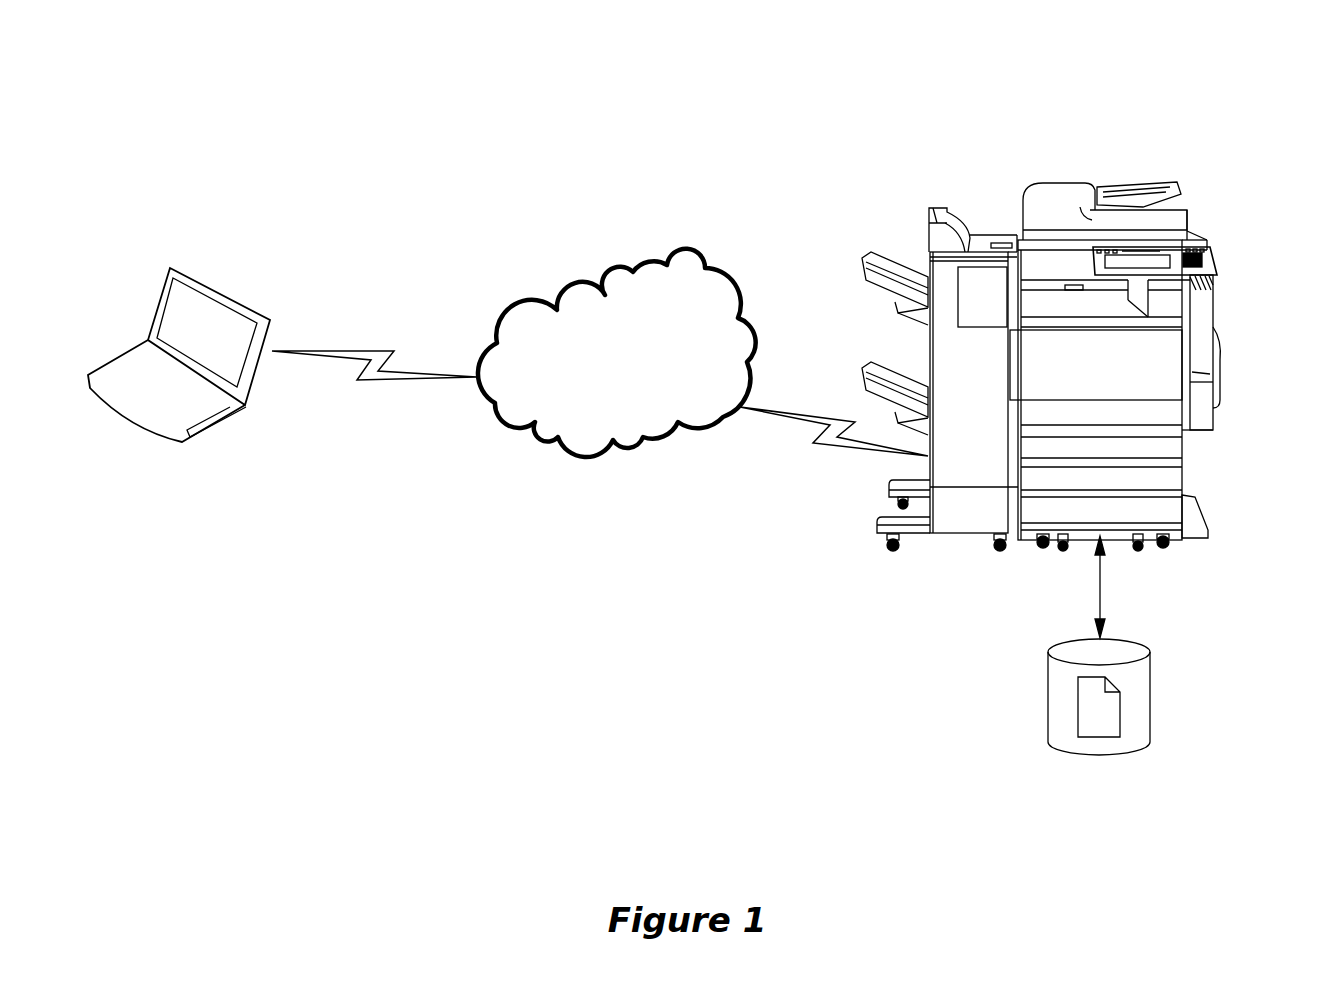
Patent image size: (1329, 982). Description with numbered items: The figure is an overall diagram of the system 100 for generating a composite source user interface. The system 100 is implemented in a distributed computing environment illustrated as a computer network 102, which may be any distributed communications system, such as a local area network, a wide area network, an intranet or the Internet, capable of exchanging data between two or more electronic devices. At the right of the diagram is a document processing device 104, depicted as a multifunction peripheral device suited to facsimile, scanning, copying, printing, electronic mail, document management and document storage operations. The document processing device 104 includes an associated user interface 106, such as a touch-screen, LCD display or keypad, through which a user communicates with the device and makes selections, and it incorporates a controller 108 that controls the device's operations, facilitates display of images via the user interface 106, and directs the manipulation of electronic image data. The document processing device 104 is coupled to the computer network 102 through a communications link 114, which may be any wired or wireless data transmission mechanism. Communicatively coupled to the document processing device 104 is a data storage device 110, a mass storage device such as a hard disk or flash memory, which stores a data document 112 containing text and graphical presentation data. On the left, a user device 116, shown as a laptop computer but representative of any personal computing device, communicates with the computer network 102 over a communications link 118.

The system 100 is at (207, 102).
The computer network 102 is at (670, 248).
The document processing device 104 is at (1037, 193).
The user interface 106 is at (1217, 250).
The controller 108 is at (1183, 365).
The data storage device 110 is at (1143, 643).
The data document 112 is at (1122, 722).
The communications link 114 is at (813, 453).
The user device 116 is at (166, 270).
The communications link 118 is at (363, 380).